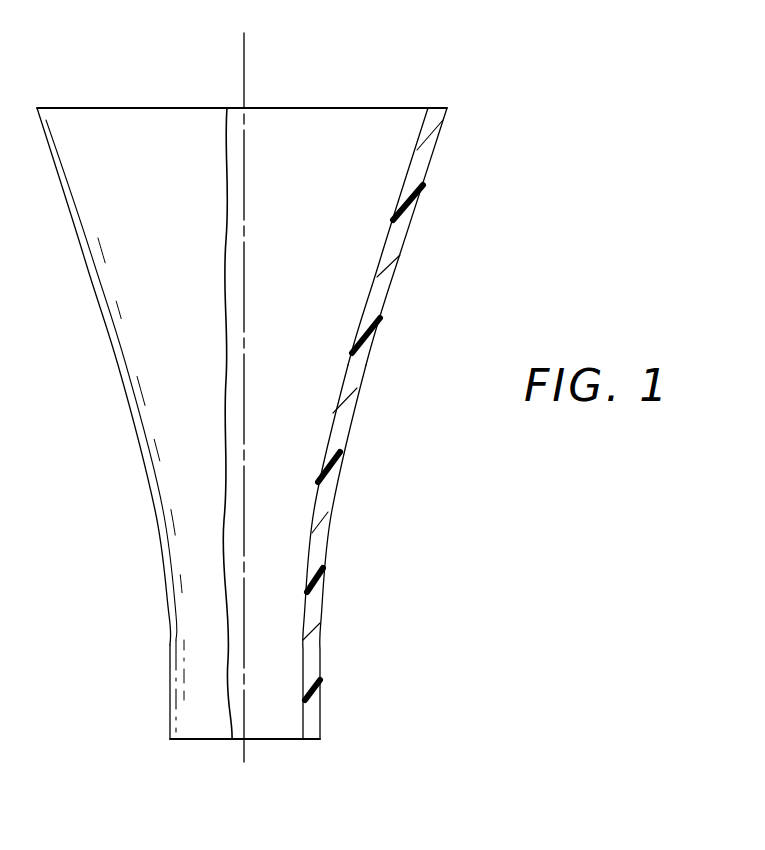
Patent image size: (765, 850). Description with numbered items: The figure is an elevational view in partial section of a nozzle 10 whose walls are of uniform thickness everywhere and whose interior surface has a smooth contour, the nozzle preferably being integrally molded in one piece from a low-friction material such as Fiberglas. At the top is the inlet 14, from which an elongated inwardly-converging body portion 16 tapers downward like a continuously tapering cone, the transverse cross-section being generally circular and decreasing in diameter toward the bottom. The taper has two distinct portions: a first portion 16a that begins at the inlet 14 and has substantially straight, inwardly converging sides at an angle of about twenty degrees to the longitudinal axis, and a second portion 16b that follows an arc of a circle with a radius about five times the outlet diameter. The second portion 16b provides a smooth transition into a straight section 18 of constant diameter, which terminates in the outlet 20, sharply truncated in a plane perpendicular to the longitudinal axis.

The nozzle 10 is at (518, 62).
The inlet 14 is at (353, 113).
The inwardly-converging body portion 16 is at (140, 386).
The first portion 16a is at (384, 362).
The second portion 16b is at (380, 365).
The straight section 18 is at (178, 697).
The outlet 20 is at (290, 730).